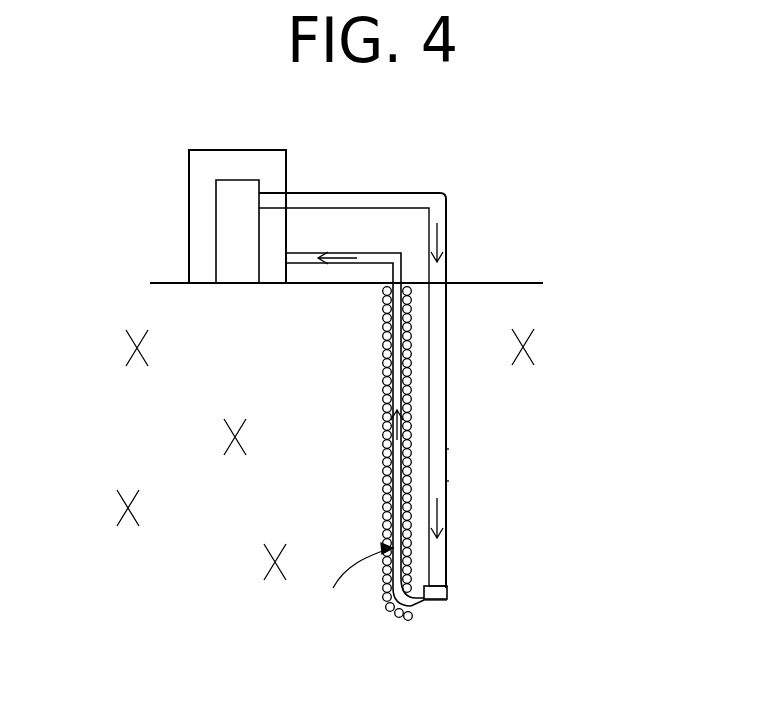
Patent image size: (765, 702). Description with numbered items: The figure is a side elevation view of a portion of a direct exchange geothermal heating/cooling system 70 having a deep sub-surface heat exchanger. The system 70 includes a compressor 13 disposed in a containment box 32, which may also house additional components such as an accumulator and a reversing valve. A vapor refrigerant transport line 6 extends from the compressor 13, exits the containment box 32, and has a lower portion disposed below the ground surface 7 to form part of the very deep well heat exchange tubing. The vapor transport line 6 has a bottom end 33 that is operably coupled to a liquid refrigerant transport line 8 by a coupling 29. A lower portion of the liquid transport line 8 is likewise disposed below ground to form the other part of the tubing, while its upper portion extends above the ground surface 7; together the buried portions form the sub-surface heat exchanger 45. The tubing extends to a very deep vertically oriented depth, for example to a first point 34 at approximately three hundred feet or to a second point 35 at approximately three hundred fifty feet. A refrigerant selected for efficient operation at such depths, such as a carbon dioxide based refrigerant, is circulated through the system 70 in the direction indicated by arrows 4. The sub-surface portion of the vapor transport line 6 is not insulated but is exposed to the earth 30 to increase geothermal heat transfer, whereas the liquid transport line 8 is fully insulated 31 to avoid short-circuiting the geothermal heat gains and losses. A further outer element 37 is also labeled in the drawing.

The arrows 4 is at (446, 228).
The vapor refrigerant transport line 6 is at (408, 193).
The ground surface 7 is at (516, 282).
The liquid refrigerant transport line 8 is at (388, 522).
The compressor 13 is at (236, 265).
The coupling 29 is at (447, 593).
The earth 30 is at (222, 433).
The insulation 31 is at (383, 347).
The containment box 32 is at (189, 190).
The bottom end 33 is at (446, 573).
The first point 34 is at (446, 449).
The second point 35 is at (446, 481).
The outer pipe 37 is at (446, 337).
The sub-surface heat exchanger 45 is at (352, 583).
The direct exchange geothermal heating/cooling system 70 is at (528, 160).